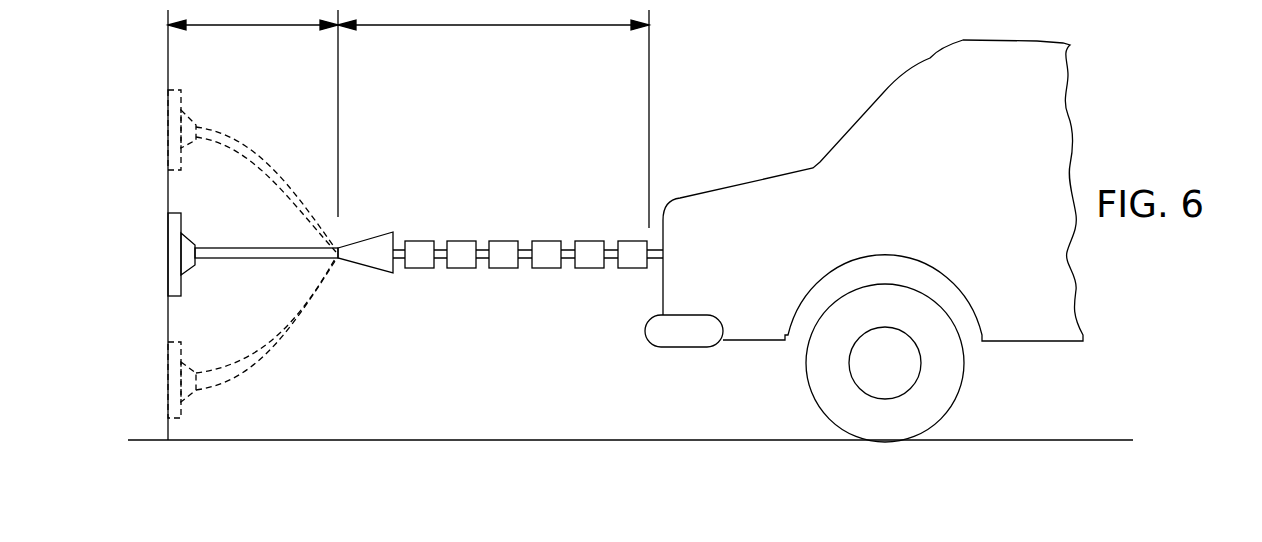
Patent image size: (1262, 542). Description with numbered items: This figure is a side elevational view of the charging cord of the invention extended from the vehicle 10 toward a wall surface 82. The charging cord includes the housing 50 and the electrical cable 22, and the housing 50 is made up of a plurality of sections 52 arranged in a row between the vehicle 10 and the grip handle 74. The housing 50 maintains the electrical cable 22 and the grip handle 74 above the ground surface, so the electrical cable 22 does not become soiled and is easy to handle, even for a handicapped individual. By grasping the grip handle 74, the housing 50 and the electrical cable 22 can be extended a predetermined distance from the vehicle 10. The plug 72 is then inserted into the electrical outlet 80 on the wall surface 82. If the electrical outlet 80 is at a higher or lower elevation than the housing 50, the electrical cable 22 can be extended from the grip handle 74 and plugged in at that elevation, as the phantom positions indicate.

The vehicle 10 is at (767, 148).
The electrical cable 22 is at (285, 260).
The housing 50 is at (528, 221).
The sections 52 is at (548, 242).
The plug 72 is at (186, 245).
The grip handle 74 is at (378, 265).
The electrical outlet 80 is at (168, 260).
The wall surface 82 is at (168, 328).